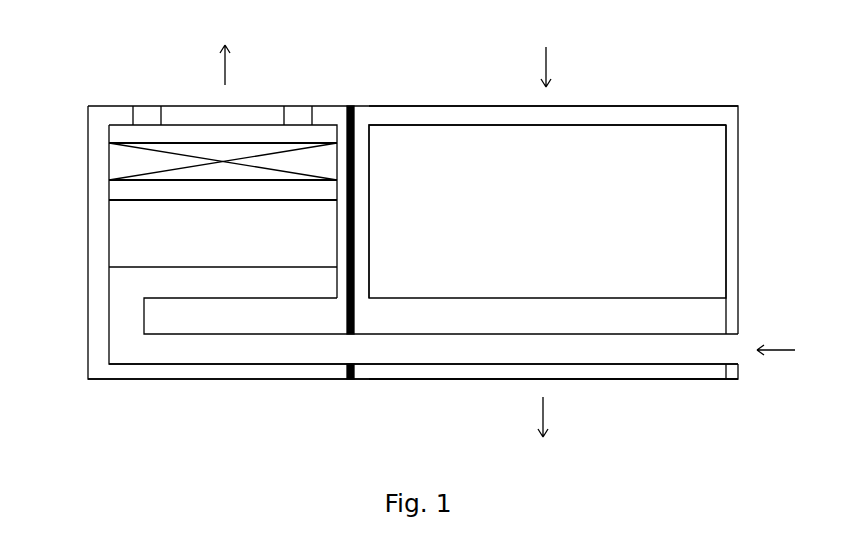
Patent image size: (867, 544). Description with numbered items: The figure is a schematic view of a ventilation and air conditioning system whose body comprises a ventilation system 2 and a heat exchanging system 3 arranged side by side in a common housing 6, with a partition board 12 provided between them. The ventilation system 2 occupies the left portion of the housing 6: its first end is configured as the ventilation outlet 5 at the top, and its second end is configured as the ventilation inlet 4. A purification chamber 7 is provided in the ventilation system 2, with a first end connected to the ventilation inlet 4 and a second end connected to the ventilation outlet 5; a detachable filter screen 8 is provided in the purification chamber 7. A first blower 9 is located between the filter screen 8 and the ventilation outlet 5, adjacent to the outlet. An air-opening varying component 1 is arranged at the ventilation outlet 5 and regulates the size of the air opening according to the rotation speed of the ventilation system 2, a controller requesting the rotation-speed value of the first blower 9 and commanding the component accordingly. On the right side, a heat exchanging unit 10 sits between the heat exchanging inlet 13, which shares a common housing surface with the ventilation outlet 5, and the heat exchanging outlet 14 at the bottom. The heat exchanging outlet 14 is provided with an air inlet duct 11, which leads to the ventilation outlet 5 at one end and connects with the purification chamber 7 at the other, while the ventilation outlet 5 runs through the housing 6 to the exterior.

The air-opening varying component 1 is at (133, 106).
The ventilation system 2 is at (107, 303).
The heat exchanging system 3 is at (726, 217).
The ventilation inlet 4 is at (738, 355).
The ventilation outlet 5 is at (261, 106).
The housing 6 is at (373, 379).
The purification chamber 7 is at (152, 193).
The filter screen 8 is at (138, 253).
The first blower 9 is at (130, 160).
The heat exchanging unit 10 is at (617, 155).
The air inlet duct 11 is at (243, 352).
The partition board 12 is at (349, 106).
The heat exchanging inlet 13 is at (477, 106).
The heat exchanging outlet 14 is at (602, 379).